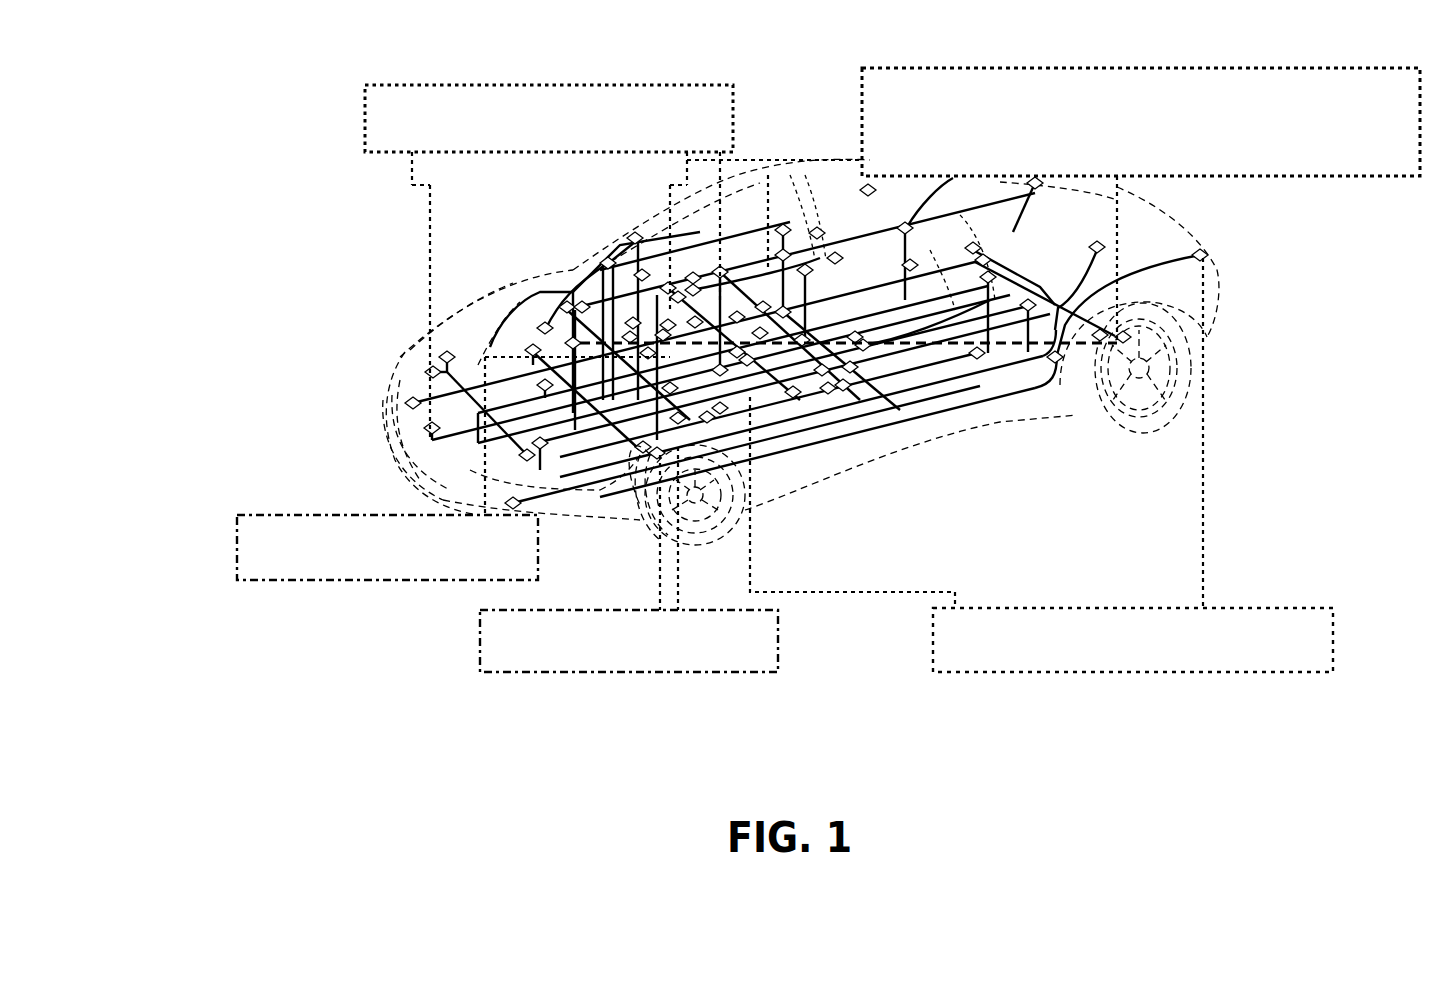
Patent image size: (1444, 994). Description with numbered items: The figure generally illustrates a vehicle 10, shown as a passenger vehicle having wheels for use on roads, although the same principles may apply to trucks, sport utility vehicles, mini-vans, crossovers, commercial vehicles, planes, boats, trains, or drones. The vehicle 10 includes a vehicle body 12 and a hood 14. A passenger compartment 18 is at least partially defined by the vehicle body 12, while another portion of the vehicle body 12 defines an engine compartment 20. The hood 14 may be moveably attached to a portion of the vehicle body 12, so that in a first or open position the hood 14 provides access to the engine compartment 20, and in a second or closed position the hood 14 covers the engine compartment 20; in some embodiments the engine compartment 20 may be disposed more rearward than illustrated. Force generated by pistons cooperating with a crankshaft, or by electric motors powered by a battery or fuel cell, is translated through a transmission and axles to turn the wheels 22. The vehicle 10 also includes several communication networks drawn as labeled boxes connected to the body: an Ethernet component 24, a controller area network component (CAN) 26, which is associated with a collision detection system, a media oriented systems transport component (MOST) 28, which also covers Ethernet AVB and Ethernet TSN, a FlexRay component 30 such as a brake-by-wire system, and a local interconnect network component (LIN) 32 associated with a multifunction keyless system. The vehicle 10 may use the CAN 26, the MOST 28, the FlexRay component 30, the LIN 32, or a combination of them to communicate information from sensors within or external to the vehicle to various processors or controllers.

The vehicle 10 is at (180, 158).
The vehicle body 12 is at (885, 326).
The hood 14 is at (523, 293).
The passenger compartment 18 is at (690, 239).
The engine compartment 20 is at (400, 343).
The wheels 22 is at (632, 508).
The Ethernet component 24 is at (218, 527).
The controller area network component (CAN) 26 is at (348, 91).
The media oriented systems transport component (MOST) 28 is at (872, 51).
The FlexRay component 30 is at (454, 635).
The local interconnect network component (LIN) 32 is at (910, 646).